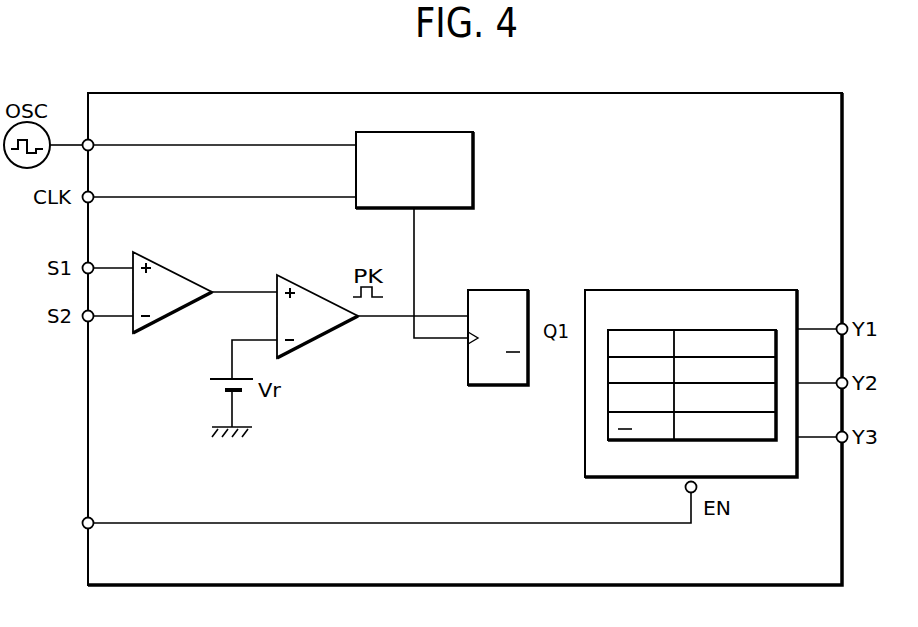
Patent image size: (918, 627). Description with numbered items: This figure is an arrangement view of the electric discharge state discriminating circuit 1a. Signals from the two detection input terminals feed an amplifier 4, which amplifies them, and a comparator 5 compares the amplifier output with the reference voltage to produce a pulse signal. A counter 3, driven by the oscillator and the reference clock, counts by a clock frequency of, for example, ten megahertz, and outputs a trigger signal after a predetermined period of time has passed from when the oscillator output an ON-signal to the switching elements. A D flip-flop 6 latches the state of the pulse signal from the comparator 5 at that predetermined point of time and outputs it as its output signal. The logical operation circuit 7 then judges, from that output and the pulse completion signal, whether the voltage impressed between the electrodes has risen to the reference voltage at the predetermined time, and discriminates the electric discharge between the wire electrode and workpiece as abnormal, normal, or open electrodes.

The electric discharge state discriminating circuit 1a is at (733, 93).
The counter 3 is at (473, 168).
The amplifier 4 is at (172, 272).
The comparator 5 is at (311, 290).
The D flip-flop 6 is at (503, 290).
The logical operation circuit 7 is at (743, 290).